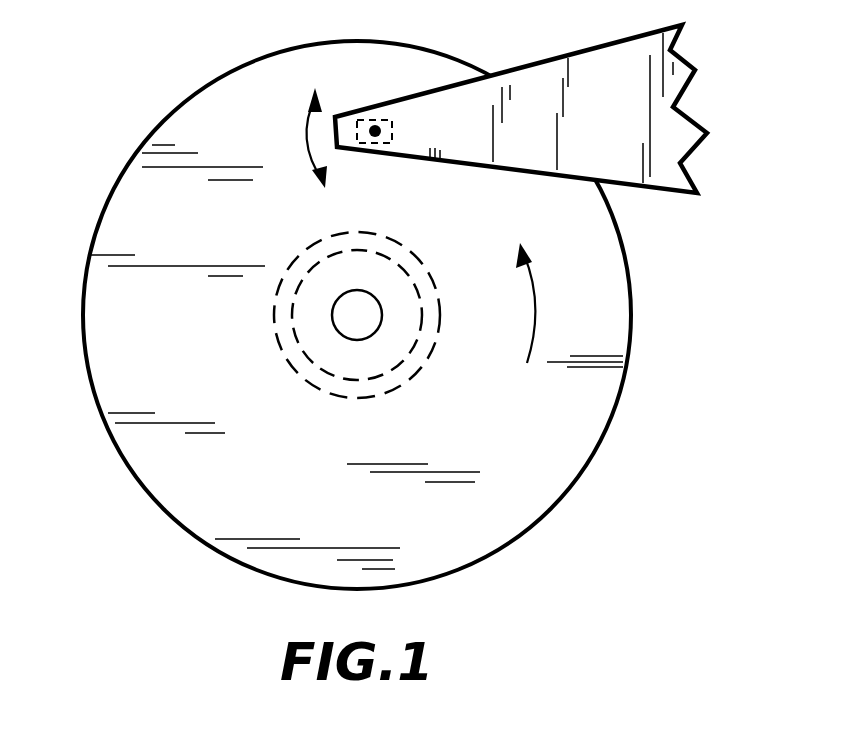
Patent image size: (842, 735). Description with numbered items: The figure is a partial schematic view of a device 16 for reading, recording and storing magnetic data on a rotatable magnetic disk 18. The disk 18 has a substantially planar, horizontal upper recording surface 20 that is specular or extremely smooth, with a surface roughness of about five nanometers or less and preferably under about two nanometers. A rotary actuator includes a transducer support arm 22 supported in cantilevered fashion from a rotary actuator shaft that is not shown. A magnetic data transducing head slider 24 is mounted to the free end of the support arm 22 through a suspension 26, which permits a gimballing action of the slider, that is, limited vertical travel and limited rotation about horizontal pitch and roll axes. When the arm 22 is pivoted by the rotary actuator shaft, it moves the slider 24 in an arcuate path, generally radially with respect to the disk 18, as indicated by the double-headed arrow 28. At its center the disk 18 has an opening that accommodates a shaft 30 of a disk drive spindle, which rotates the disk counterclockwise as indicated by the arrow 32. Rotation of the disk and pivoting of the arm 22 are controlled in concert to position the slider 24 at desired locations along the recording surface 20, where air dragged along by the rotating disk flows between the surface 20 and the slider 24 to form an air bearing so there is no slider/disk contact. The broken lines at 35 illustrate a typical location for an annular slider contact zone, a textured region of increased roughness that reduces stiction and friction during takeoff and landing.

The device for reading, recording and storing magnetic data 16 is at (214, 62).
The rotatable magnetic disk 18 is at (106, 203).
The recording surface 20 is at (278, 466).
The transducer support arm 22 is at (679, 145).
The magnetic data transducing head slider 24 is at (363, 143).
The suspension 26 is at (381, 130).
The arcuate path of slider movement 28 is at (308, 141).
The shaft of disk drive spindle 30 is at (363, 327).
The counterclockwise disk rotation direction 32 is at (536, 308).
The annular slider contact zone 35 is at (278, 310).